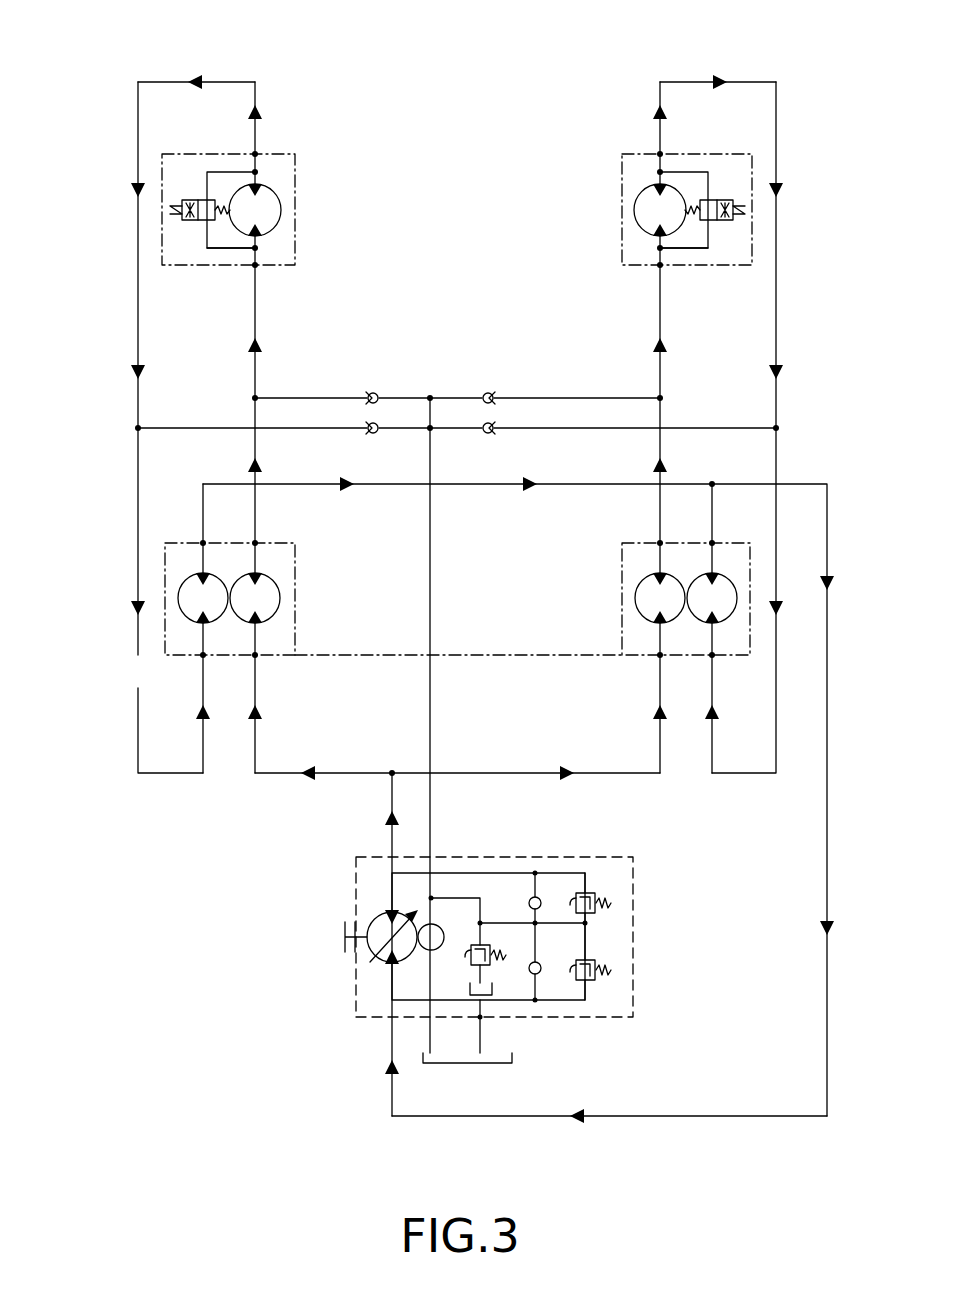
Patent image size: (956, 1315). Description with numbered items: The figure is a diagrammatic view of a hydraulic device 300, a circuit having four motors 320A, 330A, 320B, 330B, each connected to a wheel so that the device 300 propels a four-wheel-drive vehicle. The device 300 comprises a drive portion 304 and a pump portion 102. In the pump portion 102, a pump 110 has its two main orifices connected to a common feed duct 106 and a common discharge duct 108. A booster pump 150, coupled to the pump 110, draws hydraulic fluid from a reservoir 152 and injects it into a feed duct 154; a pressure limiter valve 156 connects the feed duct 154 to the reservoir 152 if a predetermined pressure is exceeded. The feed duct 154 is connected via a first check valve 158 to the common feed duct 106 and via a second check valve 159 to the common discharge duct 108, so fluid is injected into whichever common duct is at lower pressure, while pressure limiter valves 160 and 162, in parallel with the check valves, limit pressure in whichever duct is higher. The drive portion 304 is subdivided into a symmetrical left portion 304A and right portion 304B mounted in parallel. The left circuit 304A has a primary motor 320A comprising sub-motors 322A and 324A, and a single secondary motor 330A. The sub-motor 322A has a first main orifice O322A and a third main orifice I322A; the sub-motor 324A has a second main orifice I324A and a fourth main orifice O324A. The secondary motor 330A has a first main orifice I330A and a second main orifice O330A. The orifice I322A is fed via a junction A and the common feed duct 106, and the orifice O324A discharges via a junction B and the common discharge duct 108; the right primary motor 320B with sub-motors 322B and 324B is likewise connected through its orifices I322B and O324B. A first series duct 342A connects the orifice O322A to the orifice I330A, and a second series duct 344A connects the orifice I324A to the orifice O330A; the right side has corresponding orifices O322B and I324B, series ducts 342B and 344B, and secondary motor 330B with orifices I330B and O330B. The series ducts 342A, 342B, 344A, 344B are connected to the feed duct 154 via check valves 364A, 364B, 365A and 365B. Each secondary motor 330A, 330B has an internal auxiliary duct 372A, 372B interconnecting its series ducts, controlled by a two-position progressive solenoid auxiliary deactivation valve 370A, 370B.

The device 300 is at (160, 1002).
The drive portion 304 is at (130, 704).
The left portion 304A is at (285, 60).
The right portion 304B is at (630, 60).
The second series duct 344A is at (142, 326).
The second series duct 344B is at (770, 326).
The first series duct 342A is at (258, 326).
The first series duct 342B is at (656, 326).
The secondary motor 330A is at (300, 185).
The secondary motor 330B is at (617, 185).
The auxiliary deactivation valve 370A is at (190, 198).
The auxiliary deactivation valve 370B is at (726, 198).
The internal auxiliary duct 372A is at (232, 250).
The internal auxiliary duct 372B is at (683, 250).
The second main orifice of the secondary motor O330A is at (259, 152).
The second main orifice of the secondary motor O330B is at (656, 152).
The first main orifice of the secondary motor I330A is at (259, 270).
The first main orifice of the secondary motor I330B is at (656, 270).
The check valve 364A is at (376, 392).
The check valve 364B is at (494, 392).
The check valve 365A is at (376, 434).
The check valve 365B is at (494, 434).
The junction B is at (712, 484).
The junction A is at (392, 774).
The primary motor 320A is at (166, 568).
The primary motor 320B is at (623, 568).
The sub-motor 322A is at (280, 598).
The sub-motor 322B is at (635, 598).
The sub-motor 324A is at (182, 612).
The sub-motor 324B is at (732, 612).
The first main orifice of the primary motor O322A is at (257, 542).
The first main orifice of the primary motor O322B is at (658, 542).
The fourth main orifice of the primary motor O324A is at (200, 542).
The fourth main orifice of the primary motor O324B is at (714, 542).
The third main orifice of the primary motor I322A is at (257, 660).
The third main orifice of the primary motor I322B is at (657, 660).
The second main orifice of the primary motor I324A is at (200, 660).
The second main orifice of the primary motor I324B is at (715, 660).
The pump portion 102 is at (370, 1088).
The common feed duct 106 is at (392, 838).
The common discharge duct 108 is at (700, 1115).
The pump 110 is at (372, 955).
The booster pump 150 is at (435, 925).
The reservoir 152 is at (445, 1060).
The feed duct 154 is at (432, 797).
The pressure limiter valve 156 is at (500, 970).
The first check valve 158 is at (538, 897).
The second check valve 159 is at (545, 975).
The pressure limiter valve 160 is at (633, 903).
The pressure limiter valve 162 is at (633, 975).